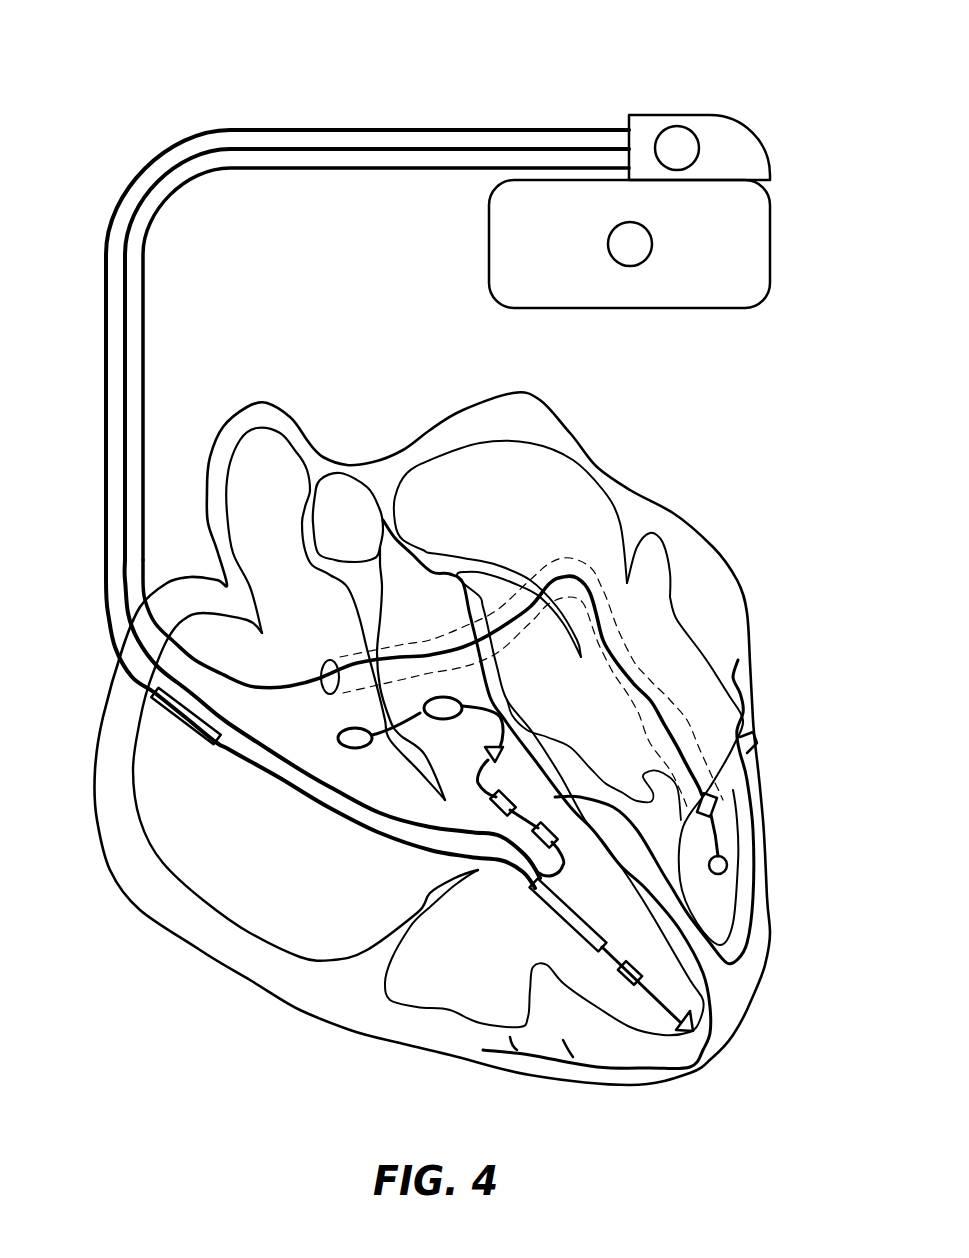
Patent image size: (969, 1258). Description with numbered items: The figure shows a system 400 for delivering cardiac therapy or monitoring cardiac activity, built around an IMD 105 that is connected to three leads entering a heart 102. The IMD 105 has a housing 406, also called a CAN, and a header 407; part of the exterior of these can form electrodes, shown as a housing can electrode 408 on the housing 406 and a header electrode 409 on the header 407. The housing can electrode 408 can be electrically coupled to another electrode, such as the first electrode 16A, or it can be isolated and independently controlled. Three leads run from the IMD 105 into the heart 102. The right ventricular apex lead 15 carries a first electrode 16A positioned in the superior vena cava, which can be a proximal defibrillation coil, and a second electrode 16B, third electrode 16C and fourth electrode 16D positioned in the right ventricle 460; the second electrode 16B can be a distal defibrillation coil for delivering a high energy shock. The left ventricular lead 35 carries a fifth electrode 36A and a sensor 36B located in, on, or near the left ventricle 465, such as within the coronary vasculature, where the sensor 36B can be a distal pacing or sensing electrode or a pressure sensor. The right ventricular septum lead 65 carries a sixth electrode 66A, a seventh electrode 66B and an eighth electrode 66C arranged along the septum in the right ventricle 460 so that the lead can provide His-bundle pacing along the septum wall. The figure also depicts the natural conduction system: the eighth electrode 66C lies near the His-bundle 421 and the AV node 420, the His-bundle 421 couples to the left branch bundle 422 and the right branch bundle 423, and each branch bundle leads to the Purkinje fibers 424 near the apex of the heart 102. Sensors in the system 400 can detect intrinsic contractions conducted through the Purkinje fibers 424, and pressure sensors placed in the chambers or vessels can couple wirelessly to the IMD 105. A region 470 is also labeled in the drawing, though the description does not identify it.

The system 400 is at (197, 35).
The IMD 105 is at (587, 98).
The housing 406 is at (771, 246).
The header 407 is at (753, 134).
The housing can electrode 408 is at (652, 244).
The header electrode 409 is at (682, 127).
The right ventricular apex lead 15 is at (307, 128).
The right ventricular septum lead 65 is at (410, 147).
The left ventricular lead 35 is at (437, 168).
The first electrode 16A is at (180, 727).
The second electrode 16B is at (550, 905).
The third electrode 16C is at (635, 968).
The fourth electrode 16D is at (697, 1023).
The fifth electrode 36A is at (716, 804).
The sensor 36B is at (727, 863).
The sixth electrode 66A is at (540, 840).
The seventh electrode 66B is at (506, 795).
The eighth electrode 66C is at (540, 712).
The heart 102 is at (743, 521).
The AV node 420 is at (338, 738).
The His-bundle 421 is at (445, 718).
The left branch bundle 422 is at (616, 795).
The right branch bundle 423 is at (613, 850).
The Purkinje fibers 424 is at (747, 748).
The right ventricle 460 is at (427, 983).
The left ventricle 465 is at (693, 665).
The left atrium 470 is at (203, 870).